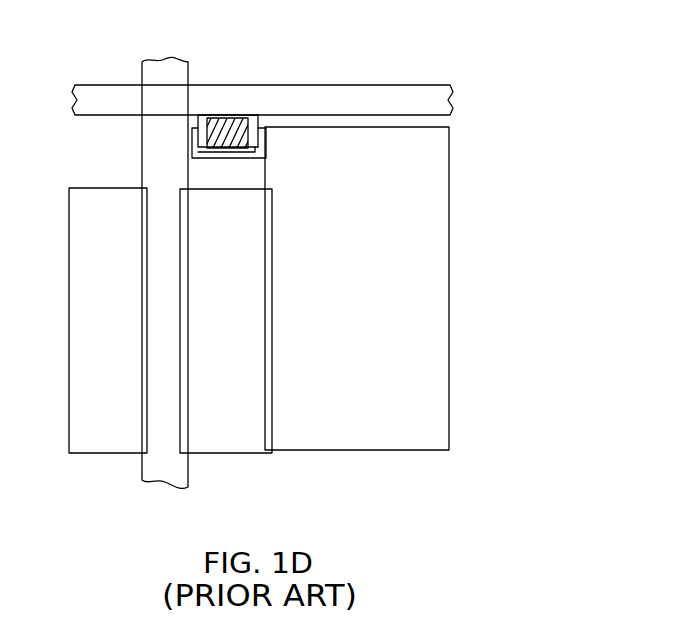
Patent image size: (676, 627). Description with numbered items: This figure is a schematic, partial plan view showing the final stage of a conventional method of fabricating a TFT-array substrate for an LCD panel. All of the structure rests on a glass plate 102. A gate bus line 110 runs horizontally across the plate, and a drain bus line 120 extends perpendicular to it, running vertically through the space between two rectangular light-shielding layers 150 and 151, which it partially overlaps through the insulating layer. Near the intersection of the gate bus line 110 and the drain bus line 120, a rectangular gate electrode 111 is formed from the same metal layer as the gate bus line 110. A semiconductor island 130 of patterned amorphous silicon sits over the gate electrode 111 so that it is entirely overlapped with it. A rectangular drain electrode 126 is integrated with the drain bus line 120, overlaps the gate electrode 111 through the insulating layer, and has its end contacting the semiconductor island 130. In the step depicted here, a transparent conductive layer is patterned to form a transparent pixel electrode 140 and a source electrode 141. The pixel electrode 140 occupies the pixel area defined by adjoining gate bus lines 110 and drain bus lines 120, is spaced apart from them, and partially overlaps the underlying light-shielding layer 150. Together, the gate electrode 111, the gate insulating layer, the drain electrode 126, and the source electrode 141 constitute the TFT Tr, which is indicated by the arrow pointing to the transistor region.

The glass plate 102 is at (518, 284).
The gate bus line 110 is at (395, 85).
The gate electrode 111 is at (255, 157).
The drain bus line 120 is at (142, 148).
The drain electrode 126 is at (205, 128).
The semiconductor island 130 is at (225, 125).
The pixel electrode 140 is at (346, 451).
The source electrode 141 is at (253, 128).
The light-shielding layer 150 is at (221, 448).
The light-shielding layer 151 is at (110, 454).
The TFT Tr is at (227, 164).